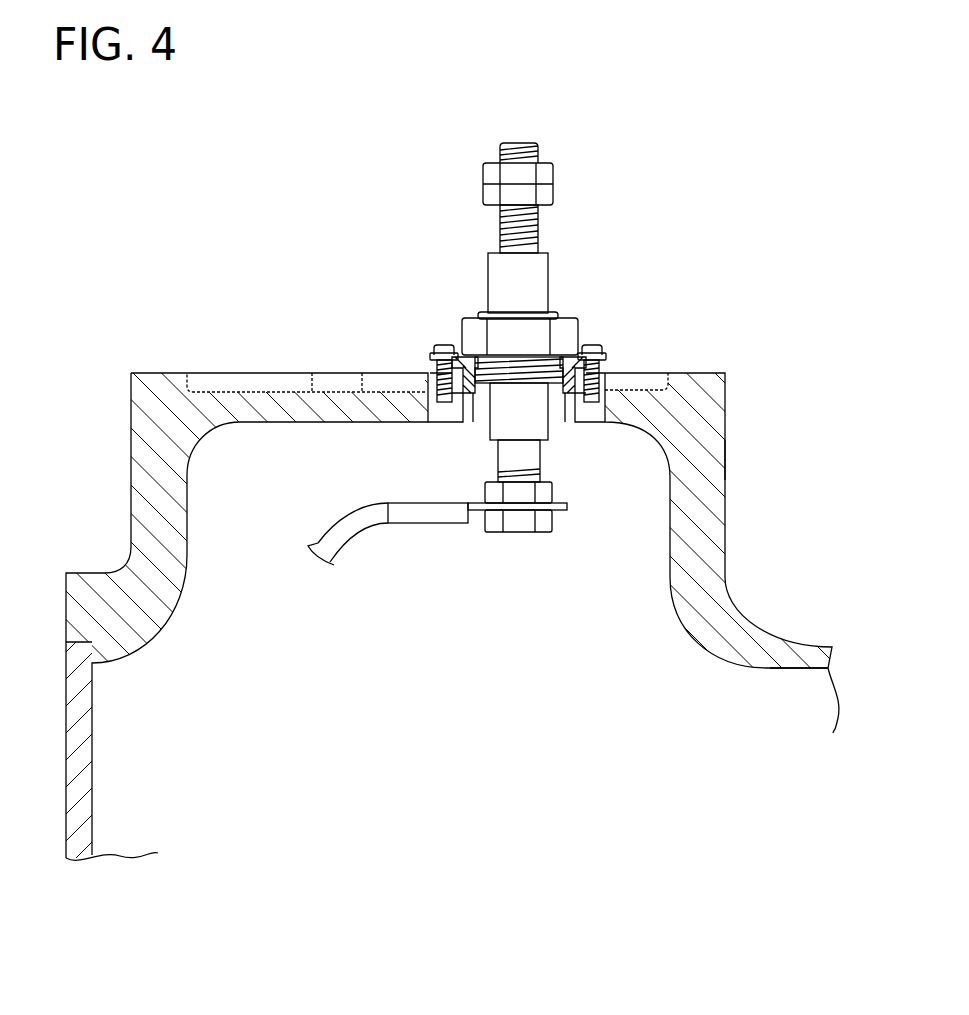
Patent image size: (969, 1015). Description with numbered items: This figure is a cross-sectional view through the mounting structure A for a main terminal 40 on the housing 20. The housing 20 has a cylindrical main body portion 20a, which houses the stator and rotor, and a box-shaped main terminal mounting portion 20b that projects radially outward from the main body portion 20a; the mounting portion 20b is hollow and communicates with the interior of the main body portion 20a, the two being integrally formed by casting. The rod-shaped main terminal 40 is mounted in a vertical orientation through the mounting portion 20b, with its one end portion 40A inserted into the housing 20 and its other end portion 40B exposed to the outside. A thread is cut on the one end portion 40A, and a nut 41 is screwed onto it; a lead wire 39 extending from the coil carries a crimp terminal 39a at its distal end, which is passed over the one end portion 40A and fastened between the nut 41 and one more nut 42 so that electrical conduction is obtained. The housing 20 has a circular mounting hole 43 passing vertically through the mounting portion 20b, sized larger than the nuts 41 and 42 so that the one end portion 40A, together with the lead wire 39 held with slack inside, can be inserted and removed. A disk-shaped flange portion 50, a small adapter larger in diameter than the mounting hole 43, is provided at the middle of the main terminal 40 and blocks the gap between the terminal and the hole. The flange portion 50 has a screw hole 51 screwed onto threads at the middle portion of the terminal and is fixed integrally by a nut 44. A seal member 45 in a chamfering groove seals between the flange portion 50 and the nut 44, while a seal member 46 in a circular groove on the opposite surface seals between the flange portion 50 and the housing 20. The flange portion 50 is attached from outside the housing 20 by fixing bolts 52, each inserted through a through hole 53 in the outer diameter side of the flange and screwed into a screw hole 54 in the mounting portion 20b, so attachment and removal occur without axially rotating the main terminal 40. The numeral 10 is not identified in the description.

The bracket 10 is at (124, 373).
The housing 20 is at (821, 435).
The main body portion 20a is at (822, 643).
The main terminal mounting portion 20b is at (727, 463).
The lead wire 39 is at (437, 565).
The crimp terminal 39a is at (430, 524).
The main terminal 40 is at (543, 312).
The one end portion 40A is at (563, 495).
The other end portion 40B is at (547, 149).
The nut 41 is at (553, 480).
The nut 42 is at (556, 522).
The mounting hole 43 is at (595, 412).
The nut 44 is at (463, 318).
The seal member 45 is at (566, 362).
The seal member 46 is at (585, 358).
The flange portion 50 is at (433, 365).
The screw hole 51 is at (492, 396).
The fixing bolt 52 is at (447, 347).
The through hole 53 is at (428, 362).
The screw hole 54 is at (455, 400).
The mounting structure A is at (599, 293).